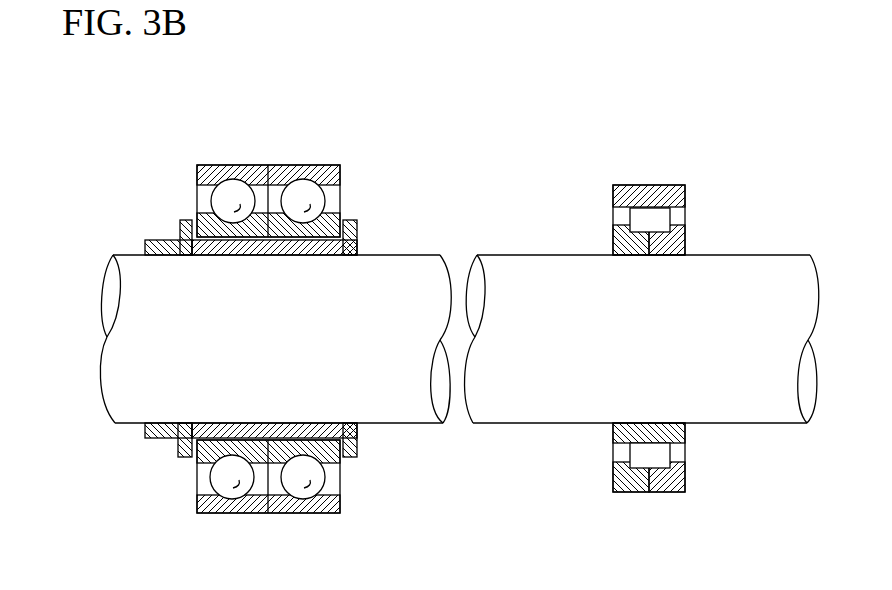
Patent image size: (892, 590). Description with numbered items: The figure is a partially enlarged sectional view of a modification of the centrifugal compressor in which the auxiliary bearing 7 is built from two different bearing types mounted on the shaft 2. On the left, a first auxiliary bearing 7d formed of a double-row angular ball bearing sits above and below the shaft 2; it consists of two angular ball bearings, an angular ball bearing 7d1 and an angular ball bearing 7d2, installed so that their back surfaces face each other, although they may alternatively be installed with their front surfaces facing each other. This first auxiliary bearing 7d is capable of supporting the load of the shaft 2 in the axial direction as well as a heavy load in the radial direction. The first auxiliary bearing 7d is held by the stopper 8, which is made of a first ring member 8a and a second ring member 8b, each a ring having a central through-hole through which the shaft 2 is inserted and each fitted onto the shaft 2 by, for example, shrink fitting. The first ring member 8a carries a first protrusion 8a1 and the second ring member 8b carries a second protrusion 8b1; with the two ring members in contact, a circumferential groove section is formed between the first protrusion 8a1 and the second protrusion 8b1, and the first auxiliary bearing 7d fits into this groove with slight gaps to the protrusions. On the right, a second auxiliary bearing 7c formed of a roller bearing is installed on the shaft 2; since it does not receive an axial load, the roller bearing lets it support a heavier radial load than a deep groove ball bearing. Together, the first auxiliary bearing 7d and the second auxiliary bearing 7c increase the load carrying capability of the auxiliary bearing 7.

The shaft 2 is at (415, 403).
The auxiliary bearing 7 is at (449, 276).
The second auxiliary bearing 7c is at (650, 186).
The first auxiliary bearing 7d is at (268, 276).
The angular ball bearing 7d1 is at (235, 167).
The angular ball bearing 7d2 is at (297, 167).
The stopper 8 is at (256, 287).
The first ring member 8a is at (308, 424).
The first protrusion 8a1 is at (357, 229).
The second ring member 8b is at (162, 430).
The second protrusion 8b1 is at (180, 229).